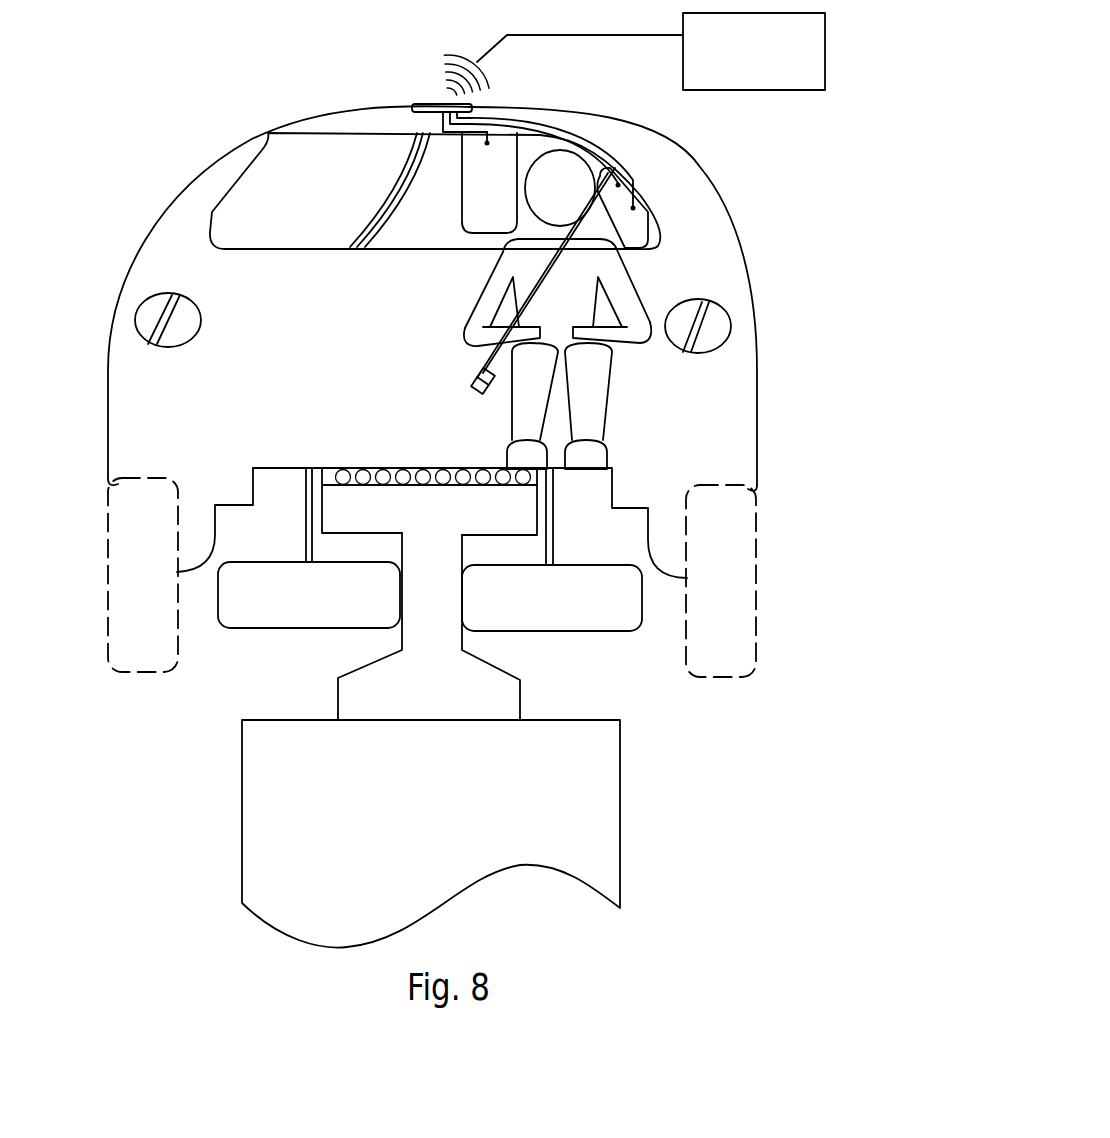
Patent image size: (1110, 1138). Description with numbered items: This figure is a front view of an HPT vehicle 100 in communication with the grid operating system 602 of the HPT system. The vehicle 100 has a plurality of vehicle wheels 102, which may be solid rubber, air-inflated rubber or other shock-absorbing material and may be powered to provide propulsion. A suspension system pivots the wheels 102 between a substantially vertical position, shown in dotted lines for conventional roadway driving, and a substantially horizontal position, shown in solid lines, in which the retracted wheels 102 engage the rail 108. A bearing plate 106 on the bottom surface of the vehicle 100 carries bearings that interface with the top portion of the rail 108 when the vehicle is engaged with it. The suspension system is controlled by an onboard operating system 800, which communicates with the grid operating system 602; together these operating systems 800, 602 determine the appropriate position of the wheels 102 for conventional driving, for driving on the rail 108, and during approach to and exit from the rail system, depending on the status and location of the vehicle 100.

The HPT vehicle 100 is at (152, 248).
The vehicle wheels 102 is at (128, 633).
The bearing plate 106 is at (324, 472).
The rail 108 is at (498, 685).
The onboard operating system 800 is at (428, 110).
The grid operating system 602 is at (767, 66).